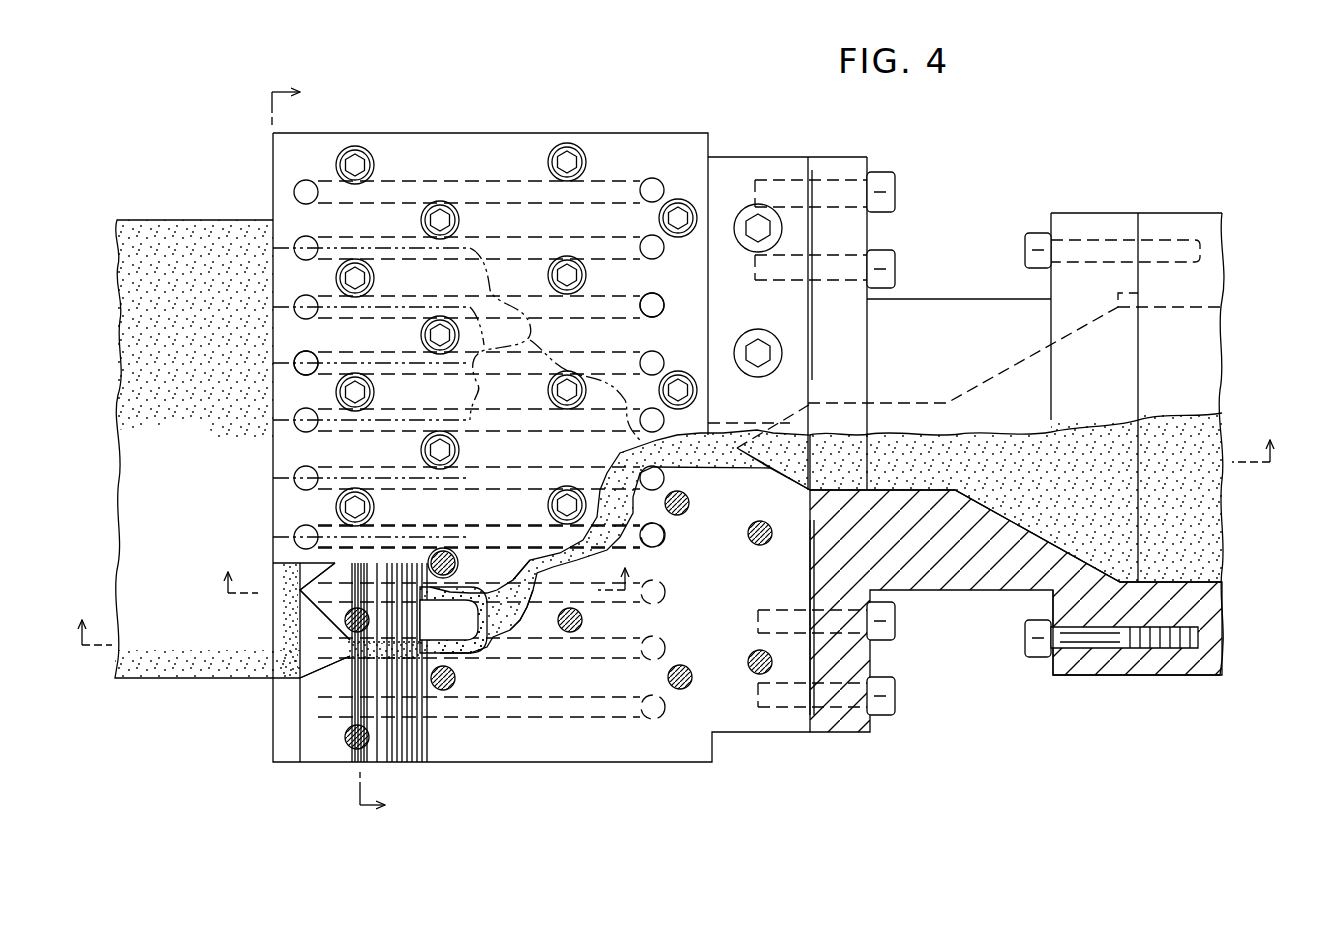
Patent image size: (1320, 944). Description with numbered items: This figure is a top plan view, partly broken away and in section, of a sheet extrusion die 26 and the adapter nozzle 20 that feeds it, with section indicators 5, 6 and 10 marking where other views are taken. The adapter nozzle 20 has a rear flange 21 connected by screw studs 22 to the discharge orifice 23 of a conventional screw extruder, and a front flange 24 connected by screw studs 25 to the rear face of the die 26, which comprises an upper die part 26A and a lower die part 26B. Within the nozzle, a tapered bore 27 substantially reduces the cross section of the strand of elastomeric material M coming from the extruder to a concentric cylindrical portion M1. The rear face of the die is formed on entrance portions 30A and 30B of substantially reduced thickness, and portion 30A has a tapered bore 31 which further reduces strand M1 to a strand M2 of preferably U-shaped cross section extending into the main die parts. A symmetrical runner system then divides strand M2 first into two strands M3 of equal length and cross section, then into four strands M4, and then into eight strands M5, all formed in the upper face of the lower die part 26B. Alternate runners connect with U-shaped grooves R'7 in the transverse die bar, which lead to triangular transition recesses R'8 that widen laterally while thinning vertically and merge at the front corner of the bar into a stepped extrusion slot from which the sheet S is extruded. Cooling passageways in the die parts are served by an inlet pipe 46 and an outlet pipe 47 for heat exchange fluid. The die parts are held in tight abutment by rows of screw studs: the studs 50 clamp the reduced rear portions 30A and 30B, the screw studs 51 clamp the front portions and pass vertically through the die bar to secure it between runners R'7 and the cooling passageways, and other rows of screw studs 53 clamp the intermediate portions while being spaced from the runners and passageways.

The sheet S is at (178, 235).
The sheet extrusion die 26 is at (690, 127).
The upper die part 26A is at (508, 150).
The lower die part 26B is at (535, 762).
The screw studs 51 is at (362, 158).
The screw studs 53 is at (555, 268).
The inlet pipe 46 is at (656, 307).
The outlet pipe 47 is at (303, 365).
The entrance portion 30A is at (735, 168).
The entrance portion 30B is at (752, 722).
The tapered bore 31 is at (805, 403).
The front flange 24 is at (845, 160).
The screw studs 25 is at (888, 255).
The adapter nozzle 20 is at (945, 300).
The rear flange 21 is at (1078, 215).
The screw studs 22 is at (1035, 238).
The discharge orifice 23 is at (1172, 215).
The tapered bore 27 is at (1020, 545).
The screw studs 50 is at (762, 547).
The elastomeric material strand M is at (1200, 524).
The cylindrical strand portion M1 is at (893, 465).
The U-shaped strand M2 is at (728, 458).
The divided strands M3 is at (625, 518).
The subdivided strands M4 is at (515, 626).
The subdivided strands M5 is at (462, 660).
The U-shaped grooves R'7 is at (453, 620).
The triangular transition recesses R'8 is at (287, 620).
The section line 5- 5 is at (674, 526).
The section line 6- 6 is at (424, 566).
The section line 10- 10 is at (351, 451).